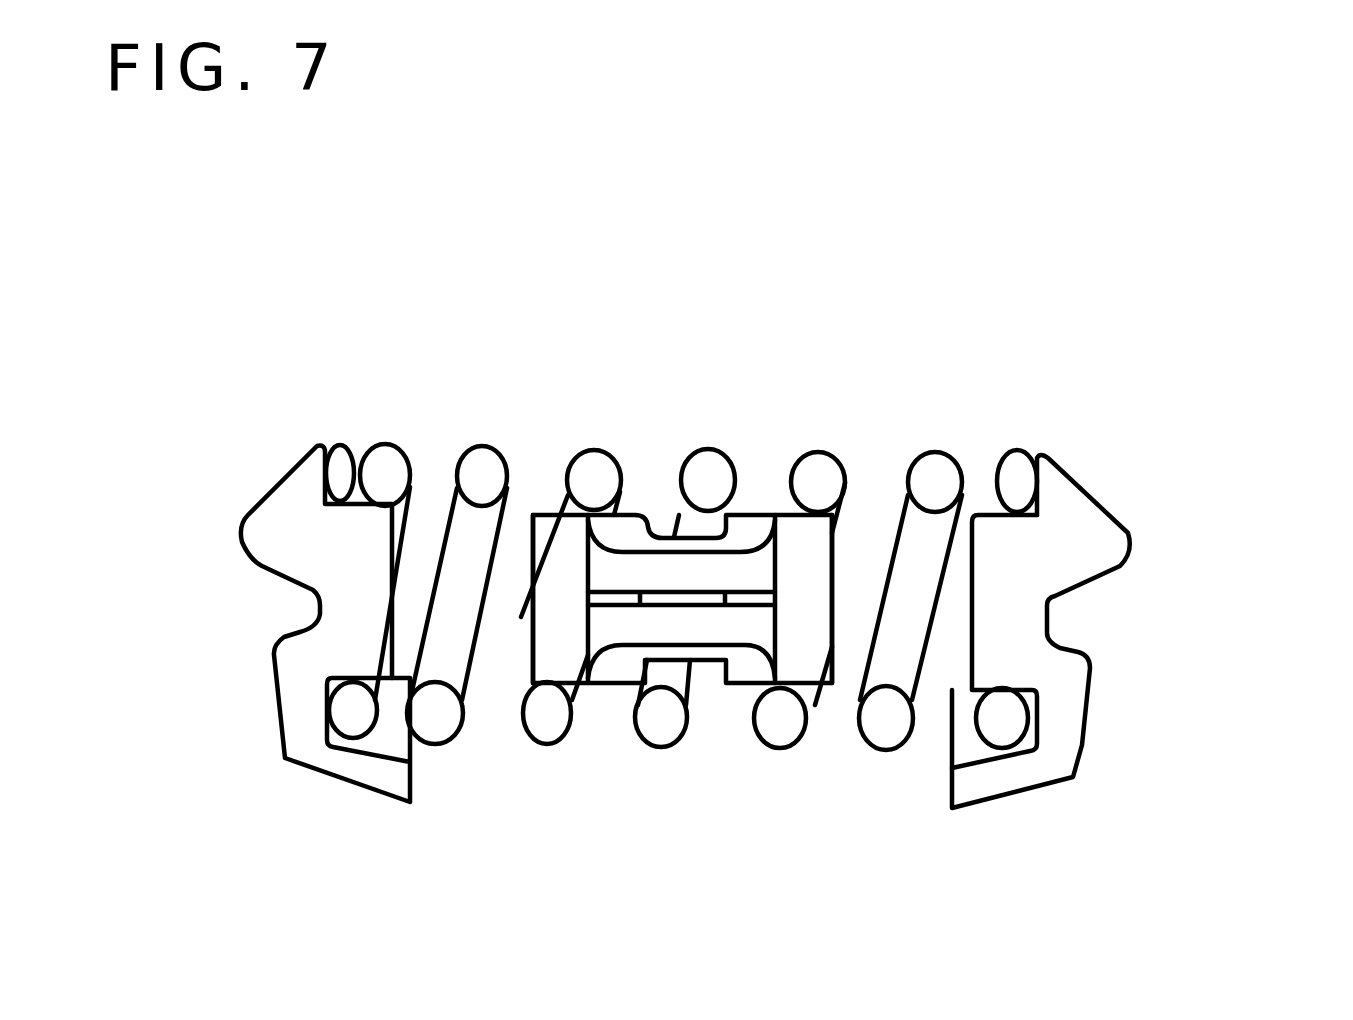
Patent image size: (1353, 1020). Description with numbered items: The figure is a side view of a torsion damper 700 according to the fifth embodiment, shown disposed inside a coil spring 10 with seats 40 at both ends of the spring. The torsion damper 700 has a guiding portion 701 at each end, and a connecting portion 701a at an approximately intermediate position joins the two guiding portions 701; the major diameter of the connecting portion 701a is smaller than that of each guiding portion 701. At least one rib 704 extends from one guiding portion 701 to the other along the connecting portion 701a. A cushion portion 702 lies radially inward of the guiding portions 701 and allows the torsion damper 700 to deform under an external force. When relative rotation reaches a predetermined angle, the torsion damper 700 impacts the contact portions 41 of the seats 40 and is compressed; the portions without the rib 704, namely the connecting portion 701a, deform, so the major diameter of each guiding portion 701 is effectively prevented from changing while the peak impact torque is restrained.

The coil spring 10 is at (386, 468).
The seat 40 is at (280, 552).
The contact portion 41 is at (395, 558).
The torsion damper 700 is at (707, 614).
The guiding portion 701 is at (548, 510).
The connecting portion 701a is at (700, 627).
The cushion portion 702 is at (833, 597).
The rib 704 is at (740, 538).